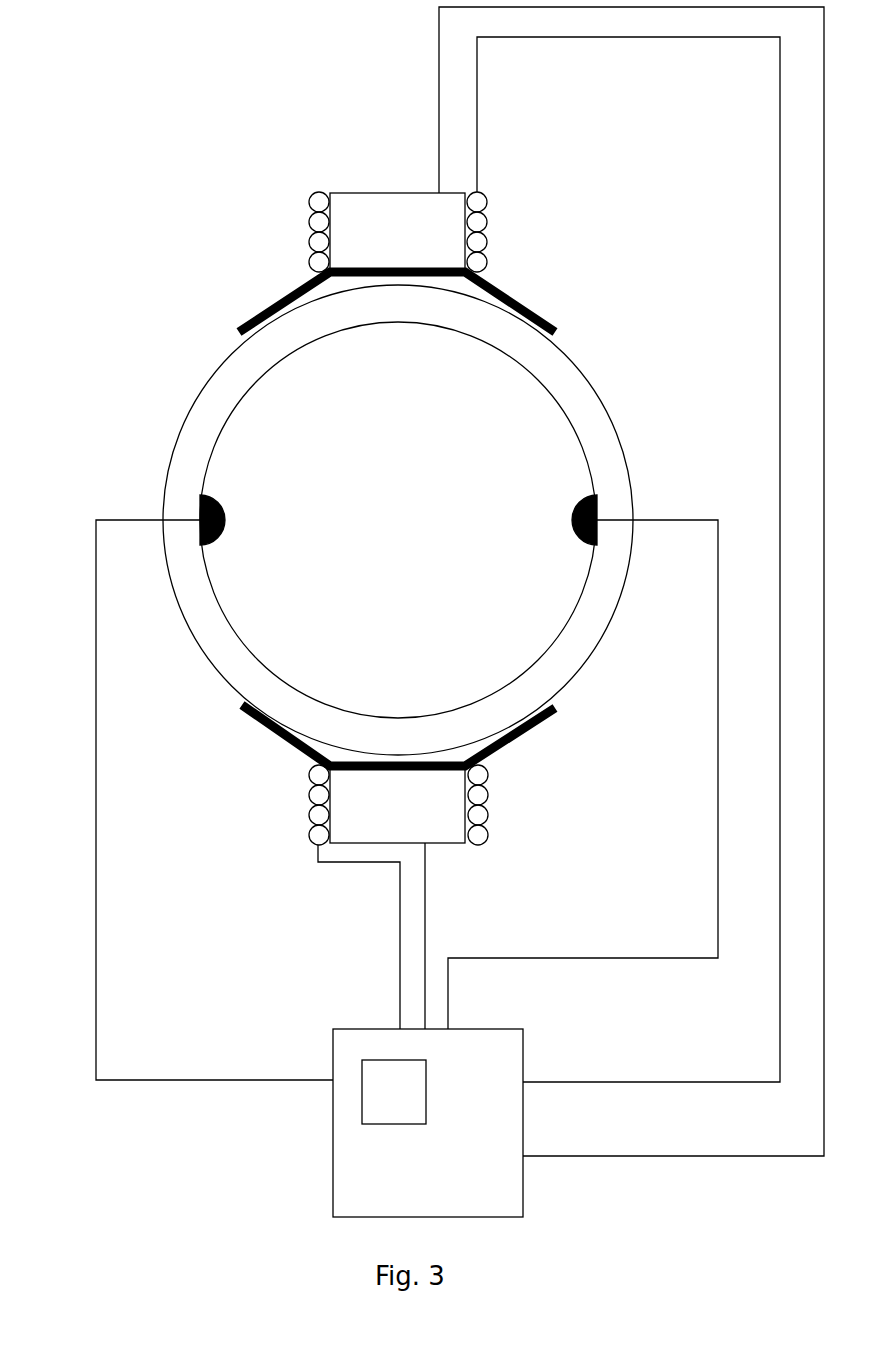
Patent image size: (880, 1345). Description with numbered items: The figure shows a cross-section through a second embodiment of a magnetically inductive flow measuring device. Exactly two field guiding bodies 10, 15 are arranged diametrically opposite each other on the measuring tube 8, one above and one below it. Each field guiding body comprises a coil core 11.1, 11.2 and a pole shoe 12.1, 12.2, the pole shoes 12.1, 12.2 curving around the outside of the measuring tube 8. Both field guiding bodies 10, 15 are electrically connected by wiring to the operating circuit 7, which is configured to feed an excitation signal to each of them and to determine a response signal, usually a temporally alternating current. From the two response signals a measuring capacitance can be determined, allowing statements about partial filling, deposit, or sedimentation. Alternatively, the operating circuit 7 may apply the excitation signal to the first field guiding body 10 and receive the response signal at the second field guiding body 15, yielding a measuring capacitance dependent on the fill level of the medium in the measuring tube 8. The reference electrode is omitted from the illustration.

The operating circuit 7 is at (428, 1123).
The measuring tube 8 is at (157, 412).
The first field guiding body 10 is at (333, 166).
The coil core 11.1 is at (357, 213).
The coil core 11.2 is at (442, 830).
The pole shoe 12.1 is at (300, 296).
The pole shoe 12.2 is at (293, 747).
The second field guiding body 15 is at (347, 852).